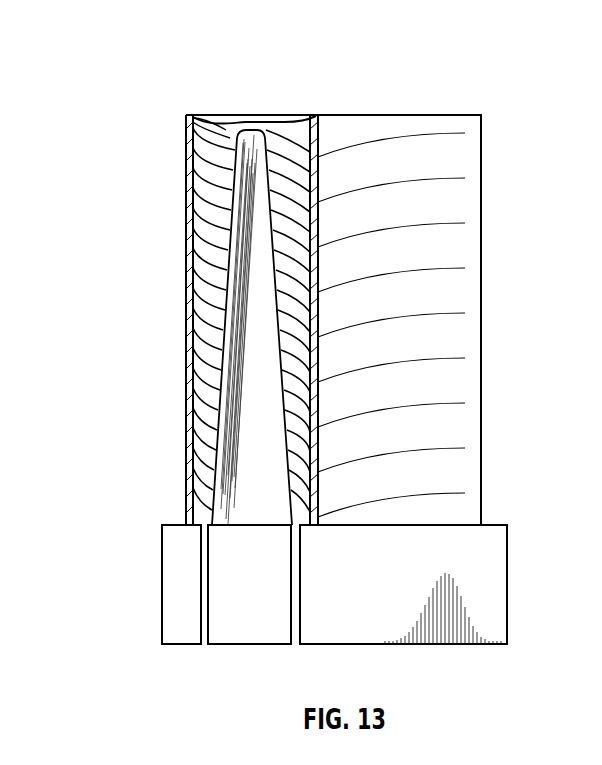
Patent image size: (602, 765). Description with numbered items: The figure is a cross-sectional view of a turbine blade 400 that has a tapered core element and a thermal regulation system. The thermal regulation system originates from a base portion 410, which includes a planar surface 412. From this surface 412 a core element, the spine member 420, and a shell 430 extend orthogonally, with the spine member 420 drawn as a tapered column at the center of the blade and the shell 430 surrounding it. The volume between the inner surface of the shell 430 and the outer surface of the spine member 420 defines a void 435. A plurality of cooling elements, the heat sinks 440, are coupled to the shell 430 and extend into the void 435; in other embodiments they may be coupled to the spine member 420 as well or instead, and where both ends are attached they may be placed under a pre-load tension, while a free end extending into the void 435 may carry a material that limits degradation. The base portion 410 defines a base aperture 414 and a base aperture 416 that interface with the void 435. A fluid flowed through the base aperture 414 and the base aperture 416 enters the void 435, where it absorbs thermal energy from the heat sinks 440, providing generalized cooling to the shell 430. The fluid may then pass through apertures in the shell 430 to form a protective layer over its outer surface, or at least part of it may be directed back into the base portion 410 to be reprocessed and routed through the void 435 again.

The turbine blade 400 is at (176, 33).
The base portion 410 is at (497, 571).
The surface 412 is at (491, 526).
The base aperture 414 is at (295, 586).
The base aperture 416 is at (205, 588).
The spine member 420 is at (190, 132).
The shell 430 is at (468, 158).
The void 435 is at (291, 124).
The heat sinks 440 is at (228, 126).